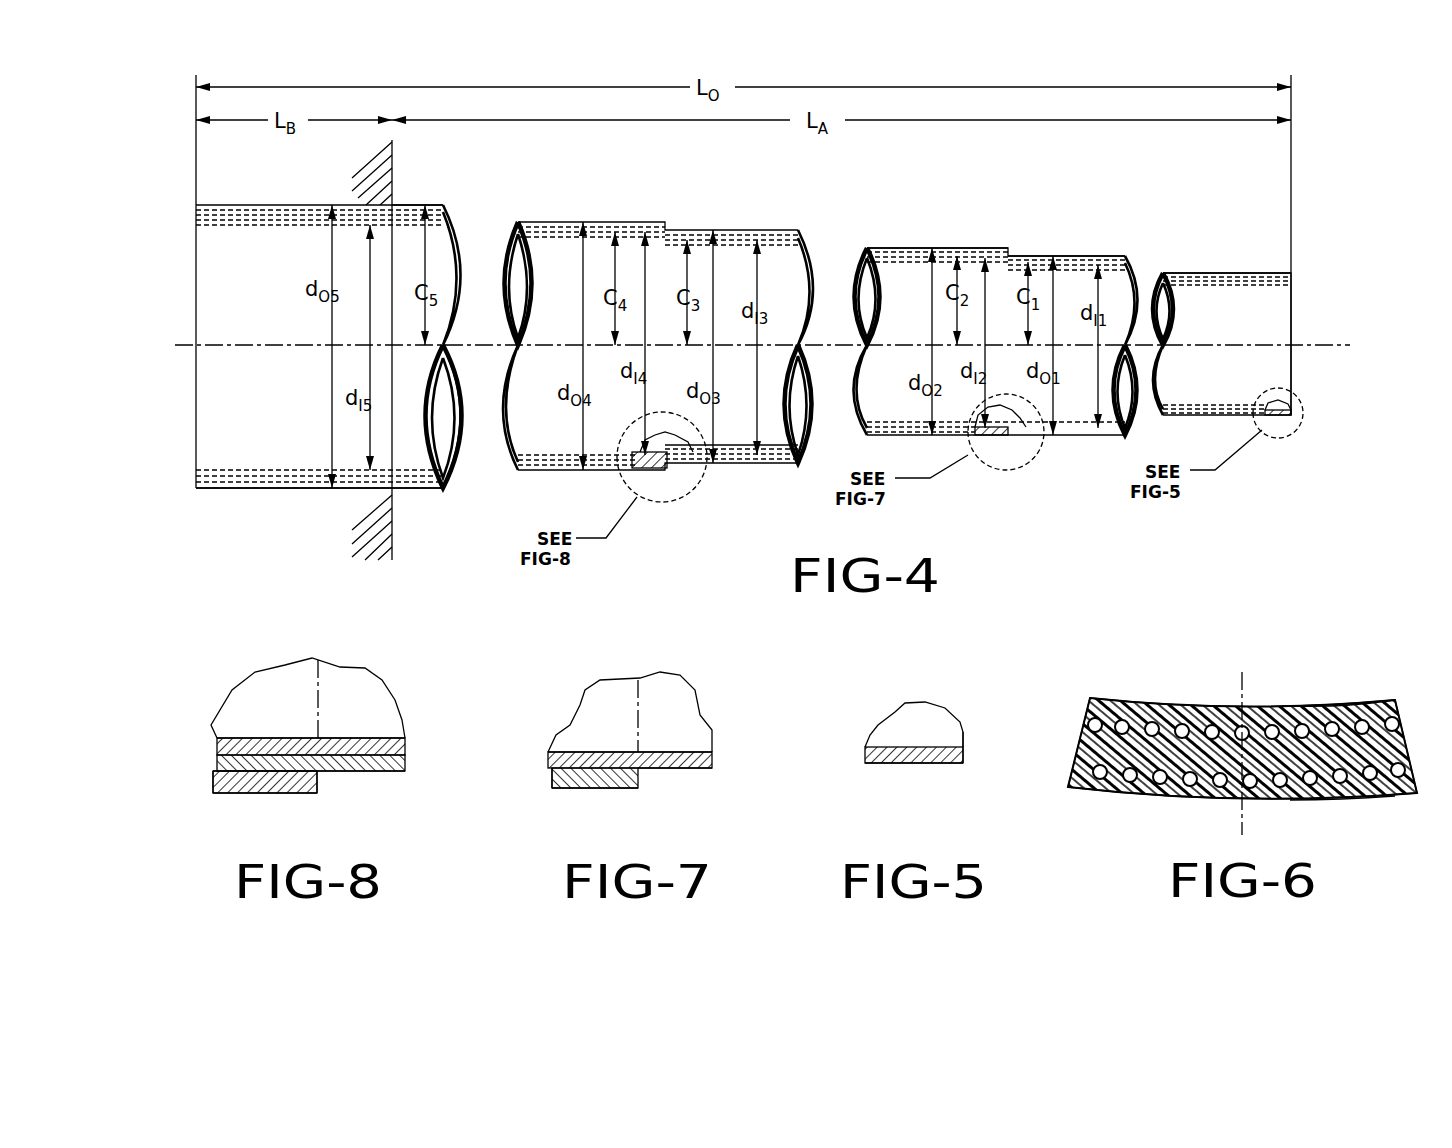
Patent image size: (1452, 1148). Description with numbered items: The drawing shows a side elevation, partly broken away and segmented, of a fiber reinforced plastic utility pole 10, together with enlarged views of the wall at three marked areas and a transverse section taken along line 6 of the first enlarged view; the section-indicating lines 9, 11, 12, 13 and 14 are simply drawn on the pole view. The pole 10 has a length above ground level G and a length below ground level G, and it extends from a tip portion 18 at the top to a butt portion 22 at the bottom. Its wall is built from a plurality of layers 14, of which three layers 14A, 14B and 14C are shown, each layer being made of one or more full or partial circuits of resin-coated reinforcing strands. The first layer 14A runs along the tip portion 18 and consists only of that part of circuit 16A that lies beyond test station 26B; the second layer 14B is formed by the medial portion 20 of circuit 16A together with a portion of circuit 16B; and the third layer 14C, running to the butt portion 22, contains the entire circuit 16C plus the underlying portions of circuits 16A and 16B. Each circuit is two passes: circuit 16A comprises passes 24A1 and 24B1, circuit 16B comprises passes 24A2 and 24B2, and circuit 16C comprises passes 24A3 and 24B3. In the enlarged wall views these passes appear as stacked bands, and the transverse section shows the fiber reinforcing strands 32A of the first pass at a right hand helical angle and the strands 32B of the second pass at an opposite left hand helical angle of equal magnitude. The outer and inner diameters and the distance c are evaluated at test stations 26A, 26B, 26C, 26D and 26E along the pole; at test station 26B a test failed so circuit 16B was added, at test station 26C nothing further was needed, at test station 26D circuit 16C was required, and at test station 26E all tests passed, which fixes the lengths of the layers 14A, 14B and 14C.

In FIG. 4, the utility pole 10 is at (440, 505).
In FIG. 4, the medial portion 20 is at (440, 402).
In FIG. 4, the butt portion 22 is at (196, 245).
In FIG. 4, the tip portion 18 is at (1291, 372).
In FIG. 5, the tip portion 18 is at (963, 732).
In FIG. 4, the ground level G is at (392, 168).
In FIG. 4, the first layer 14A is at (1221, 386).
In FIG. 4, the second layer 14B is at (896, 422).
In FIG. 4, the third layer 14C is at (288, 436).
In FIG. 4, the first circuit 16A is at (1291, 277).
In FIG. 8, the first circuit 16A is at (405, 740).
In FIG. 7, the first circuit 16A is at (712, 760).
In FIG. 5, the first circuit 16A is at (963, 757).
In FIG. 6, the first circuit 16A is at (1242, 738).
In FIG. 8, the second circuit 16B is at (405, 763).
In FIG. 7, the second circuit 16B is at (640, 782).
In FIG. 8, the third circuit 16C is at (320, 786).
In FIG. 4, the test station 26A is at (1040, 256).
In FIG. 7, the test station 26A is at (700, 772).
In FIG. 4, the test station 26B is at (978, 248).
In FIG. 7, the test station 26B is at (602, 790).
In FIG. 4, the test station 26C is at (677, 462).
In FIG. 8, the test station 26C is at (368, 771).
In FIG. 4, the test station 26D is at (655, 464).
In FIG. 8, the test station 26D is at (300, 785).
In FIG. 4, the test station 26E is at (410, 205).
In FIG. 8, the first pass 24A1 is at (405, 738).
In FIG. 7, the first pass 24A1 is at (670, 752).
In FIG. 5, the first pass 24A1 is at (866, 748).
In FIG. 6, the first pass 24A1 is at (1328, 710).
In FIG. 8, the second pass 24B1 is at (350, 755).
In FIG. 7, the second pass 24B1 is at (600, 752).
In FIG. 5, the second pass 24B1 is at (866, 765).
In FIG. 6, the second pass 24B1 is at (1328, 797).
In FIG. 8, the first pass 24A2 is at (268, 738).
In FIG. 7, the first pass 24A2 is at (555, 774).
In FIG. 8, the second pass 24B2 is at (262, 775).
In FIG. 7, the second pass 24B2 is at (555, 785).
In FIG. 8, the first pass 24A3 is at (213, 780).
In FIG. 8, the second pass 24B3 is at (215, 790).
In FIG. 6, the fiber reinforcing strands 32A is at (1152, 722).
In FIG. 6, the fiber reinforcing strands 32B is at (1162, 784).
In FIG. 5, the section line 6 is at (928, 747).
In FIG. 4, the section line 9- 9 is at (1321, 248).
In FIG. 4, the section line 11- 11 is at (1073, 500).
In FIG. 4, the section line 12- 12 is at (938, 185).
In FIG. 4, the section line 13- 13 is at (735, 535).
In FIG. 4, the layers 14 is at (597, 166).